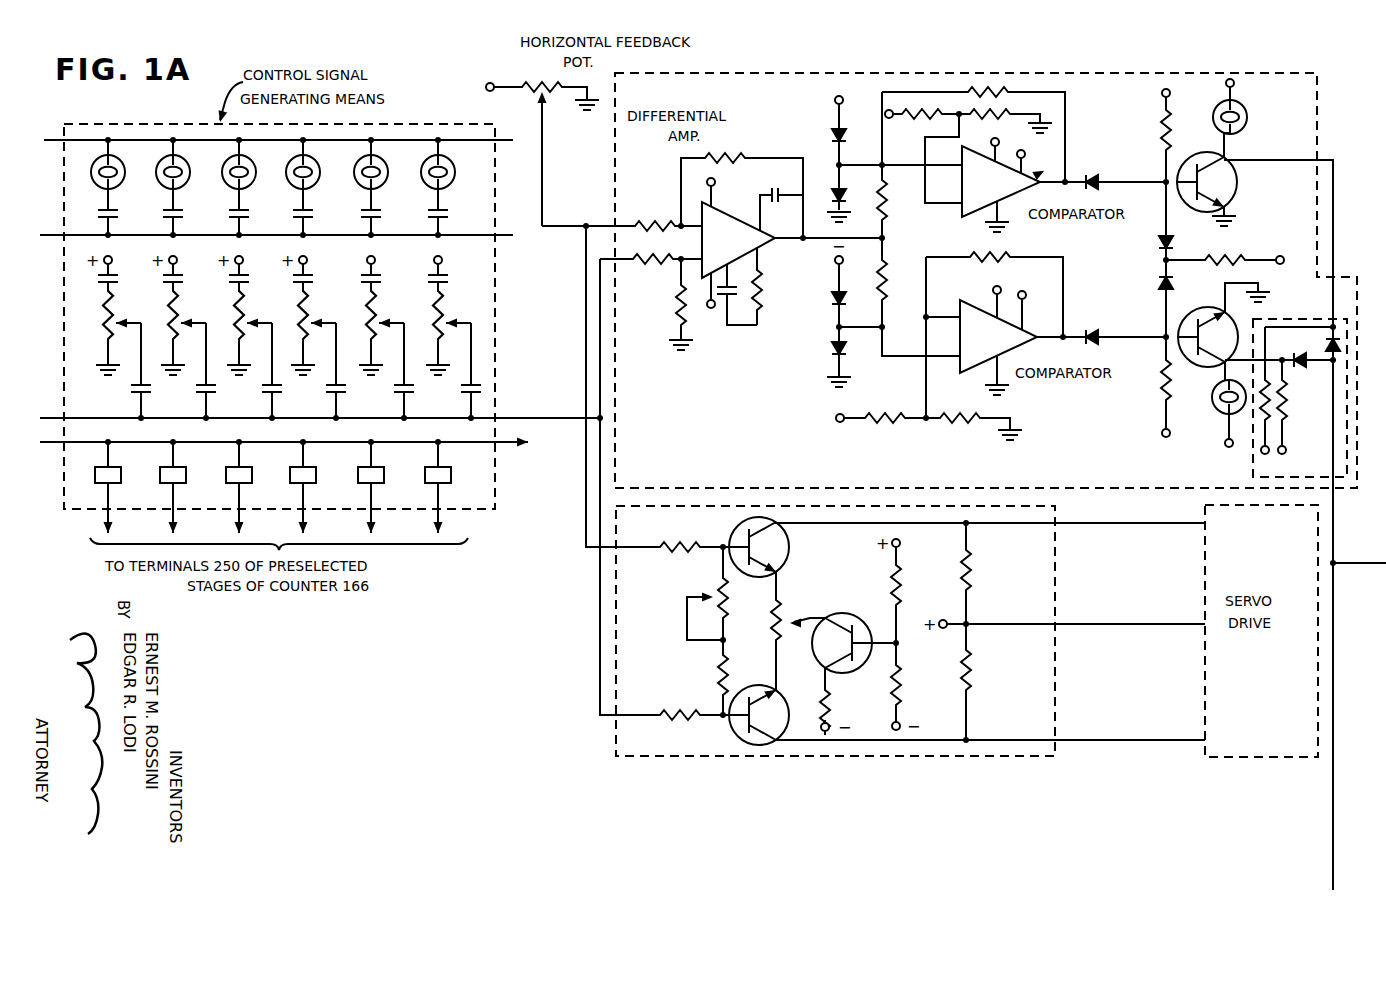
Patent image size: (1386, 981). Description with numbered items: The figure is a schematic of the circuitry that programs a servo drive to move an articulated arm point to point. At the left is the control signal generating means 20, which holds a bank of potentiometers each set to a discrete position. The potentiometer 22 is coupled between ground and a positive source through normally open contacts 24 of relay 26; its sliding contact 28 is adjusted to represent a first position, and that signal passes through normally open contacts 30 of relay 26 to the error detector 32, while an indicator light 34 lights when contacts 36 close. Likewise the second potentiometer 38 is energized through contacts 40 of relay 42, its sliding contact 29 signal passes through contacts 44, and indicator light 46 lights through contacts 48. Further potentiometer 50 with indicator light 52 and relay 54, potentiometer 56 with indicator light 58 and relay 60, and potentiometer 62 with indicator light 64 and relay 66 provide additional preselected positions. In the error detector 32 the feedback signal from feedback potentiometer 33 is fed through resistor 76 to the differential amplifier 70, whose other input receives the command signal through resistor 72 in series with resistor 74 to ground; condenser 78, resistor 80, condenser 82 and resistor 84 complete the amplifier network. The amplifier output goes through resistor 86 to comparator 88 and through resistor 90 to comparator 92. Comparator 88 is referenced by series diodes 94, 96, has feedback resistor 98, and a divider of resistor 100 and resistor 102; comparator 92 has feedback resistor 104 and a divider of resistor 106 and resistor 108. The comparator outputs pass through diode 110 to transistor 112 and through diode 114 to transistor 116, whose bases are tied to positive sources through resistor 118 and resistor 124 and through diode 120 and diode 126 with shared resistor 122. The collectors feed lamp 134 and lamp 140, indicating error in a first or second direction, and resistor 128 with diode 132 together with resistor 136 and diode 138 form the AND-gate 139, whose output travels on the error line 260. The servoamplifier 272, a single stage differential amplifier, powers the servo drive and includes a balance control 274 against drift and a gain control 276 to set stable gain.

The control signal generating means 20 is at (500, 325).
The potentiometer 22 is at (428, 322).
The normally open contacts 24 is at (444, 270).
The relay 26 is at (426, 476).
The sliding contact 28 is at (448, 320).
The sliding contact 29 is at (386, 317).
The normally open contacts 30 is at (476, 386).
The error detector 32 is at (1074, 66).
The feedback potentiometer 33 is at (534, 96).
The indicator light 34 is at (389, 174).
The normally open contacts 36 is at (448, 214).
The second potentiometer 38 is at (370, 316).
The normally open contacts 40 is at (376, 270).
The relay 42 is at (360, 476).
The normally open contacts 44 is at (409, 397).
The indicator light 46 is at (321, 174).
The normally open contacts 48 is at (382, 214).
The potentiometer 50 is at (302, 316).
The indicator light 52 is at (255, 174).
The relay 54 is at (292, 476).
The potentiometer 56 is at (236, 316).
The indicator light 58 is at (189, 174).
The relay 60 is at (228, 476).
The potentiometer 62 is at (170, 316).
The indicator light 64 is at (124, 174).
The relay 66 is at (162, 476).
The differential amplifier 70 is at (672, 198).
The resistor 72 is at (648, 273).
The resistor 74 is at (676, 311).
The resistor 76 is at (651, 225).
The condenser 78 is at (770, 188).
The resistor 80 is at (726, 158).
The condenser 82 is at (723, 316).
The resistor 84 is at (764, 317).
The resistor 86 is at (885, 206).
The comparator 88 is at (1032, 200).
The resistor 90 is at (887, 288).
The comparator 92 is at (1030, 355).
The diode 94 is at (836, 190).
The diode 96 is at (836, 144).
The resistor 98 is at (980, 90).
The resistor 100 is at (912, 112).
The resistor 102 is at (1000, 108).
The resistor 104 is at (991, 257).
The resistor 106 is at (963, 406).
The resistor 108 is at (893, 406).
The diode 110 is at (1093, 176).
The transistor 112 is at (1240, 184).
The diode 114 is at (1091, 332).
The transistor 116 is at (1202, 310).
The resistor 118 is at (1160, 132).
The diode 120 is at (1160, 244).
The resistor 122 is at (1226, 258).
The resistor 124 is at (1162, 398).
The diode 126 is at (1158, 282).
The resistor 128 is at (1285, 353).
The diode 132 is at (1326, 334).
The lamp 134 is at (1214, 128).
The resistor 136 is at (1281, 414).
The diode 138 is at (1285, 388).
The AND-gate 139 is at (1250, 472).
The lamp 140 is at (1212, 394).
The error line 260 is at (1333, 799).
The servoamplifier 272 is at (756, 760).
The balance control 274 is at (770, 624).
The gain control 276 is at (704, 626).